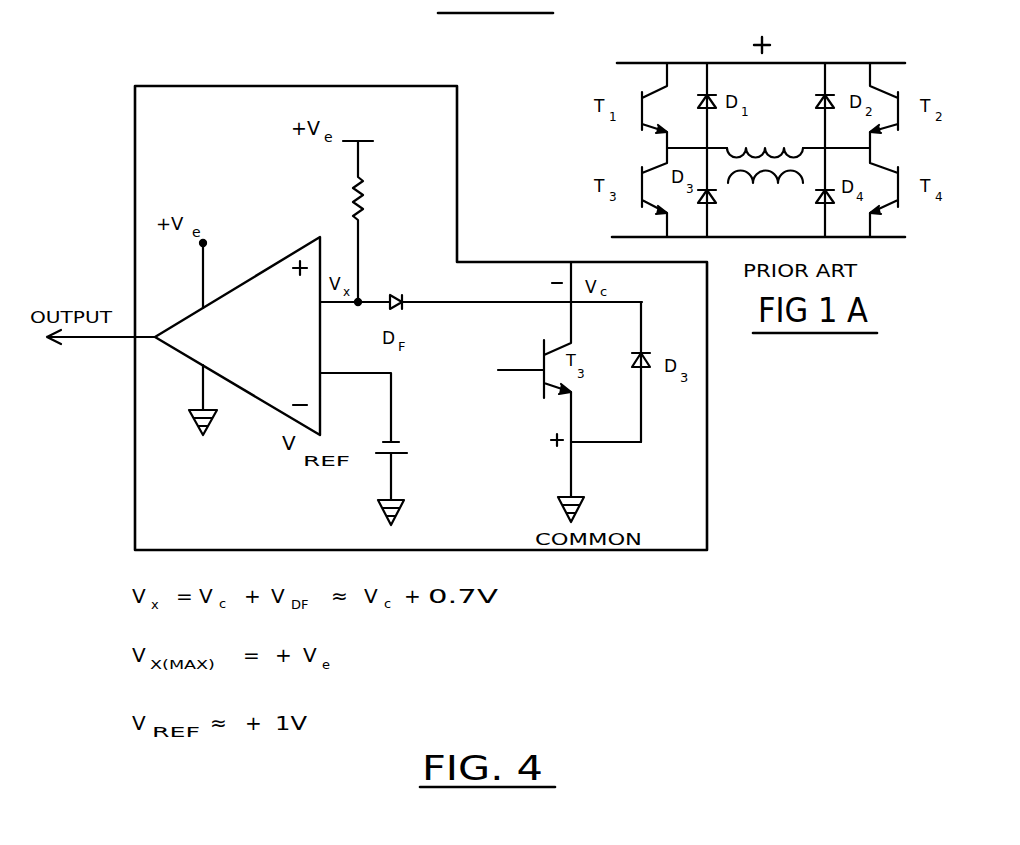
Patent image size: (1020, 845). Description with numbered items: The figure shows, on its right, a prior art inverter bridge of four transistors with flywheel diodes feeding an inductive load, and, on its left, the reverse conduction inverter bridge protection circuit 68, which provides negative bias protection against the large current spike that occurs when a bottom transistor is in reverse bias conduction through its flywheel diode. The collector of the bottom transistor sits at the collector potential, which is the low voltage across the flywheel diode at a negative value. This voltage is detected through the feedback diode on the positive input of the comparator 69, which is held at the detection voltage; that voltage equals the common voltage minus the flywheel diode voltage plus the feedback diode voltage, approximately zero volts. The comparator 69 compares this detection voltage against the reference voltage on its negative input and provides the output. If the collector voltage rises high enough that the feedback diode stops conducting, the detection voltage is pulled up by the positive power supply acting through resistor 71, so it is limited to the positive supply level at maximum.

The reverse conduction inverter bridge protection circuit 68 is at (421, 318).
The comparator 69 is at (270, 275).
The resistor 71 is at (353, 207).